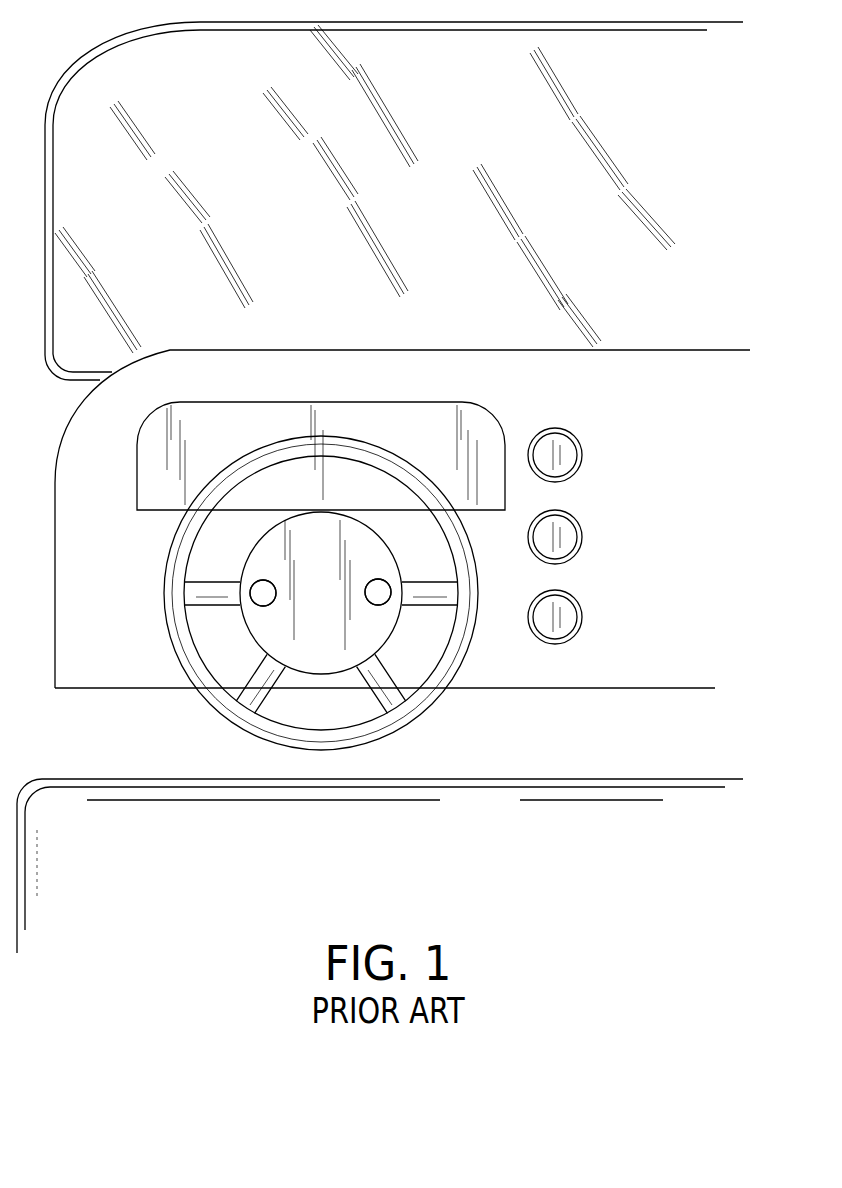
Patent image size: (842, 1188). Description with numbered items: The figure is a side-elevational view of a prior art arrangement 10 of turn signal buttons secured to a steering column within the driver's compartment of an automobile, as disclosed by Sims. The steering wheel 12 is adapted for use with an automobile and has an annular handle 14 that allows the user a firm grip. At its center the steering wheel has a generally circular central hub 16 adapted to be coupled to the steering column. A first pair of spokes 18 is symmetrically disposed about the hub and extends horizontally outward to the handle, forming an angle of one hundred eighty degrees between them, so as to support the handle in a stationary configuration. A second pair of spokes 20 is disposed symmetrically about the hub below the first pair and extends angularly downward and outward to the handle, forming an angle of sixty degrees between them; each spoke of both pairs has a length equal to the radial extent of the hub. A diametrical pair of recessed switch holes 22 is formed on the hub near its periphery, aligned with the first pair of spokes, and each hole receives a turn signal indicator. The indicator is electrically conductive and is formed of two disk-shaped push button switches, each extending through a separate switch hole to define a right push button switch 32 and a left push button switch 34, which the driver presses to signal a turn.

The prior art steering wheel assembly 10 is at (140, 593).
The steering wheel 12 is at (387, 630).
The annular handle 14 is at (478, 573).
The central hub 16 is at (320, 662).
The first pair of spokes 18 is at (213, 590).
The second pair of spokes 20 is at (383, 698).
The recessed switch holes 22 is at (372, 604).
The right push button switch 32 is at (377, 579).
The left push button switch 34 is at (257, 580).